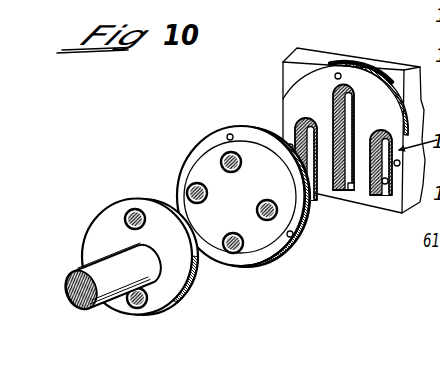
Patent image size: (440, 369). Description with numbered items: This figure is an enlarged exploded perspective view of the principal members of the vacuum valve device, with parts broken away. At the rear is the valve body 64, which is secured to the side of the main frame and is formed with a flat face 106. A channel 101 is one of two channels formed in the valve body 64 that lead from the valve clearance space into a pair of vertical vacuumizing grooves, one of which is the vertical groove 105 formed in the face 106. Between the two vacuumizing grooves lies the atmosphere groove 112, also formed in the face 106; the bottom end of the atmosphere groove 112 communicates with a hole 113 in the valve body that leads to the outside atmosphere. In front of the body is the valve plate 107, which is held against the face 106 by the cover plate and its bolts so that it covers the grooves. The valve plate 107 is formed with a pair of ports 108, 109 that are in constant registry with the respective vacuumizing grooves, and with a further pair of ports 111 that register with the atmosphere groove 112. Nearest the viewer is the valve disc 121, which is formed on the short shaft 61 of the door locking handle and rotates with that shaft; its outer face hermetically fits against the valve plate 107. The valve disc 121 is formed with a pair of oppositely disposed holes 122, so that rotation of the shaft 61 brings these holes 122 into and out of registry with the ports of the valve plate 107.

The valve body 64 is at (310, 55).
The flat face 106 is at (363, 89).
The vertical groove 105 is at (299, 121).
The atmosphere groove 112 is at (344, 84).
The hole 113 is at (347, 190).
The channel 101 is at (383, 196).
The valve plate 107 is at (210, 167).
The ports 111 is at (226, 153).
The port 109 is at (186, 189).
The port 108 is at (268, 221).
The valve disc 121 is at (102, 238).
The holes 122 is at (124, 214).
The shaft 61 is at (107, 274).